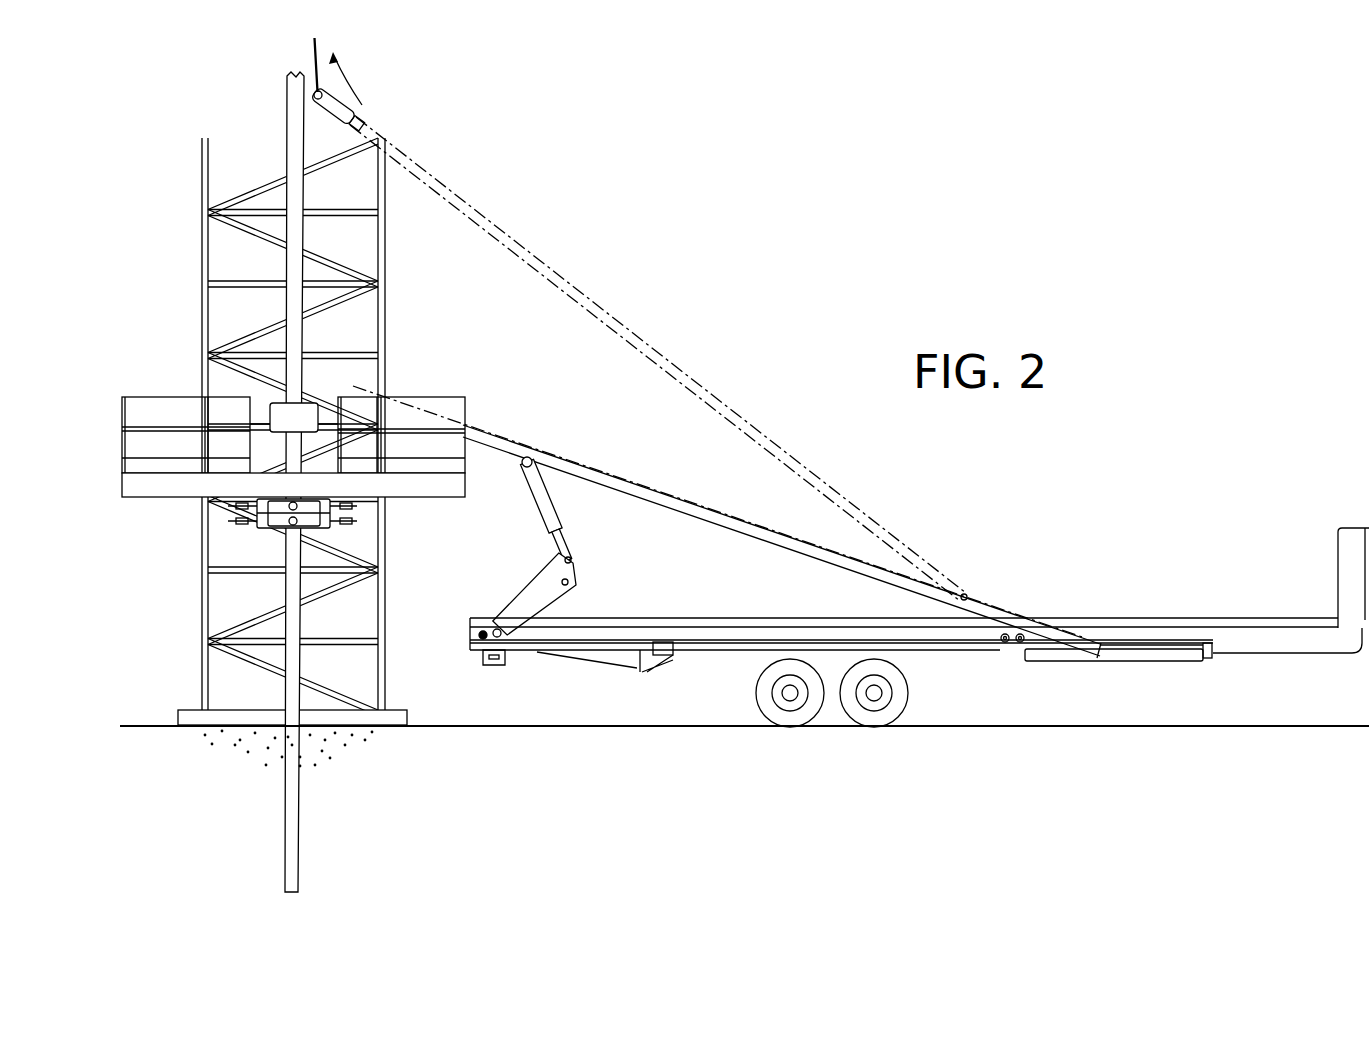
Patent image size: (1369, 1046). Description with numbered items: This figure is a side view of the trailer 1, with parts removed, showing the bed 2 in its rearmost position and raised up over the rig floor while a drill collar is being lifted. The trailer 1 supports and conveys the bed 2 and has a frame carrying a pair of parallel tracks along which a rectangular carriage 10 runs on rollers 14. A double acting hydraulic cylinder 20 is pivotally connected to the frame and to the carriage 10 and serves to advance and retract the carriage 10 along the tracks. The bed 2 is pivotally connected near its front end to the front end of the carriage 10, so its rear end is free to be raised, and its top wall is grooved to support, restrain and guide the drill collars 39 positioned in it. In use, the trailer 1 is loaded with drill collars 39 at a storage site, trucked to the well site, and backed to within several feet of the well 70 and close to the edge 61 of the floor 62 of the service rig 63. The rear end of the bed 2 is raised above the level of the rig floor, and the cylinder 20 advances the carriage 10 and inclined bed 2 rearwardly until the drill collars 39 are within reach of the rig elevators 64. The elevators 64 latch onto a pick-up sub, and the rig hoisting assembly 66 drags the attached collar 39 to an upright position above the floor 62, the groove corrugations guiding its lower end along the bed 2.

The trailer 1 is at (1228, 665).
The bed 2 is at (623, 493).
The carriage 10 is at (912, 637).
The rollers 14 is at (730, 632).
The double acting hydraulic cylinder 20 is at (1142, 655).
The drill collars 39 is at (723, 407).
The edge of the floor 61 is at (465, 487).
The floor 62 is at (410, 476).
The service rig 63 is at (412, 371).
The rig elevators 64 is at (360, 117).
The rig hoisting assembly 66 is at (314, 56).
The well 70 is at (297, 627).